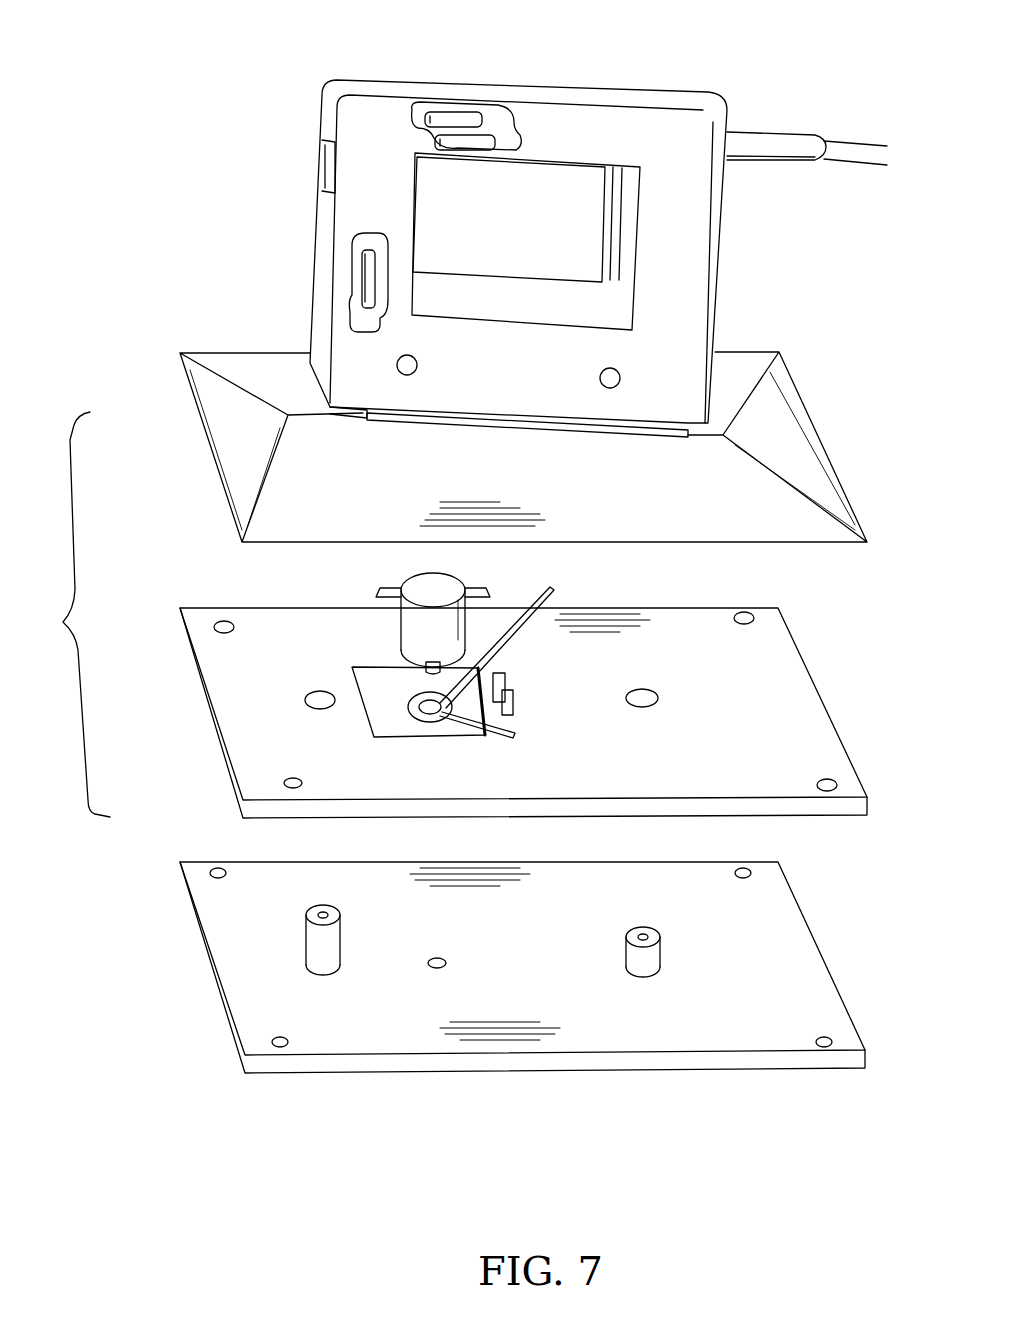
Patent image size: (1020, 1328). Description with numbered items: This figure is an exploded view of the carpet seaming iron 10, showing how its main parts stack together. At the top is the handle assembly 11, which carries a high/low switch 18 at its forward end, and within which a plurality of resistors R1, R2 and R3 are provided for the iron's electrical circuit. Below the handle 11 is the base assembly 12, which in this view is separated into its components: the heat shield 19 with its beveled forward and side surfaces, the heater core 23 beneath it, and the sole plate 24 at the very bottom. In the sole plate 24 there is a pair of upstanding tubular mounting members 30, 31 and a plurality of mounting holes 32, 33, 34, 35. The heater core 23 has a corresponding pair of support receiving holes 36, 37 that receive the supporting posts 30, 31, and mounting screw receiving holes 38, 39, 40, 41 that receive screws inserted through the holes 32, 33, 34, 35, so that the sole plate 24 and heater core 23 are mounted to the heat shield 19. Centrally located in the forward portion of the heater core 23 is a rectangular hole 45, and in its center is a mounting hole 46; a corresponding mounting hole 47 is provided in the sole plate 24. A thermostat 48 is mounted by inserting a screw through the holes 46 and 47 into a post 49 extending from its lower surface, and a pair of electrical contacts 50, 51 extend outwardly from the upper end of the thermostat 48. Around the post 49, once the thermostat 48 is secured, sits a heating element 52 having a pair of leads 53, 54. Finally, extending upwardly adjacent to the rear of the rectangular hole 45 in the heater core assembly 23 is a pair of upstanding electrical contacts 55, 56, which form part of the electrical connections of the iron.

The carpet seaming iron 10 is at (652, 74).
The handle assembly 11 is at (725, 275).
The resistor R1 is at (445, 115).
The resistor R2 is at (487, 143).
The resistor R3 is at (365, 258).
The high/low switch 18 is at (300, 156).
The heat shield 19 is at (800, 452).
The base assembly 12 is at (76, 614).
The heater core 23 is at (820, 698).
The sole plate 24 is at (522, 1001).
The upstanding tubular mounting member 30 is at (336, 940).
The upstanding tubular mounting member 31 is at (657, 955).
The mounting hole 32 is at (214, 877).
The mounting hole 33 is at (272, 1040).
The mounting hole 34 is at (752, 875).
The mounting hole 35 is at (830, 1038).
The support receiving hole 36 is at (310, 695).
The support receiving hole 37 is at (645, 694).
The mounting screw receiving hole 38 is at (222, 622).
The mounting screw receiving hole 39 is at (290, 790).
The mounting screw receiving hole 40 is at (752, 618).
The mounting screw receiving hole 41 is at (835, 785).
The rectangular hole 45 is at (388, 724).
The mounting hole 46 is at (420, 698).
The mounting hole 47 is at (444, 960).
The thermostat 48 is at (447, 582).
The post 49 is at (420, 660).
The electrical contact 50 is at (488, 592).
The electrical contact 51 is at (388, 590).
The heating element 52 is at (440, 722).
The lead 53 is at (517, 738).
The lead 54 is at (556, 594).
The upstanding electrical contact 55 is at (506, 683).
The upstanding electrical contact 56 is at (514, 705).